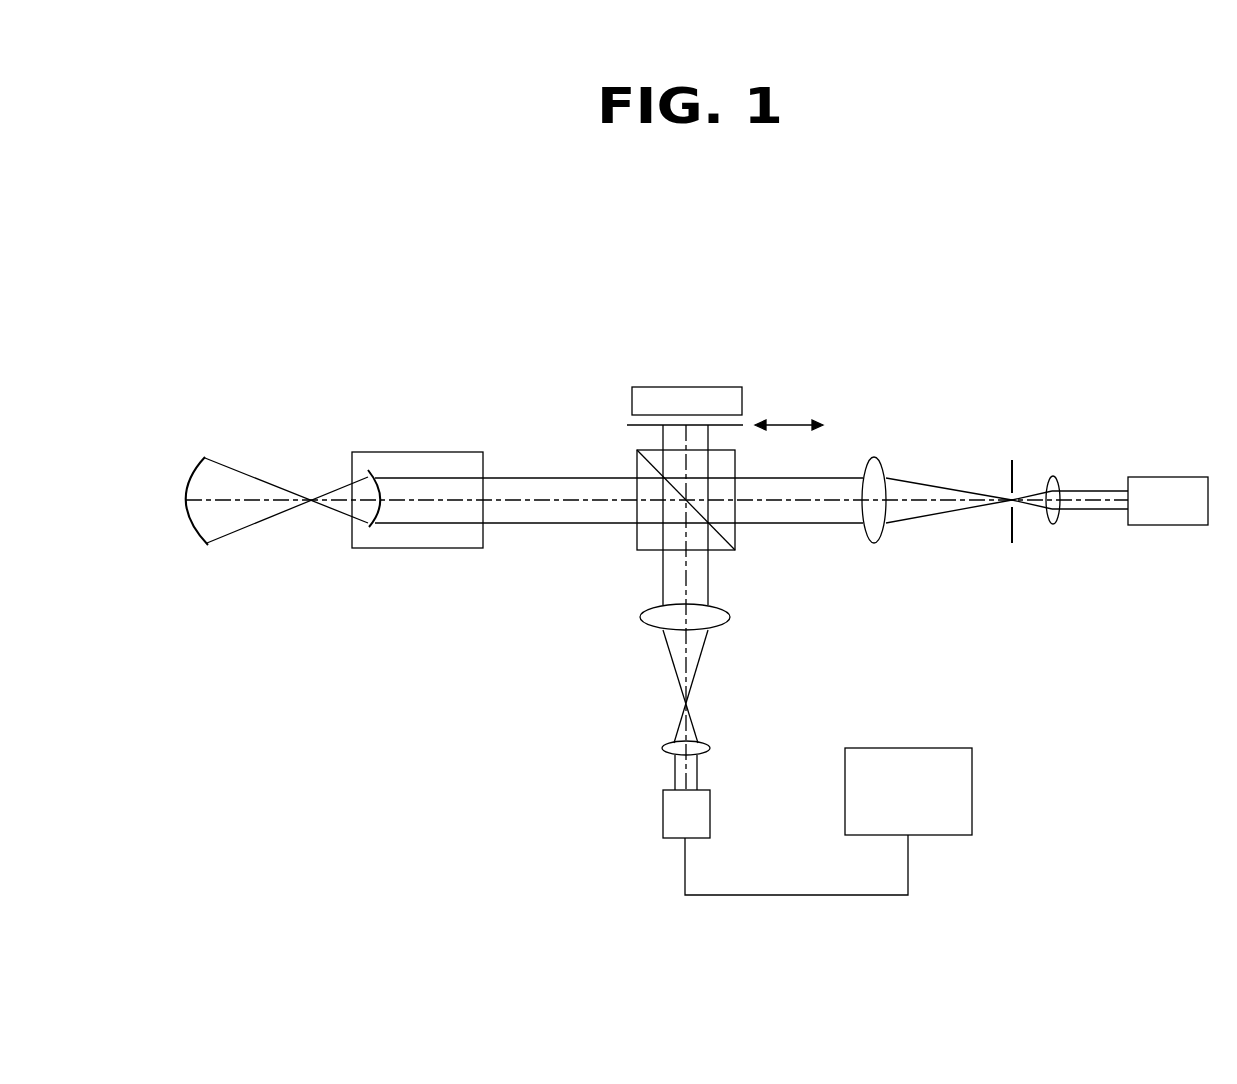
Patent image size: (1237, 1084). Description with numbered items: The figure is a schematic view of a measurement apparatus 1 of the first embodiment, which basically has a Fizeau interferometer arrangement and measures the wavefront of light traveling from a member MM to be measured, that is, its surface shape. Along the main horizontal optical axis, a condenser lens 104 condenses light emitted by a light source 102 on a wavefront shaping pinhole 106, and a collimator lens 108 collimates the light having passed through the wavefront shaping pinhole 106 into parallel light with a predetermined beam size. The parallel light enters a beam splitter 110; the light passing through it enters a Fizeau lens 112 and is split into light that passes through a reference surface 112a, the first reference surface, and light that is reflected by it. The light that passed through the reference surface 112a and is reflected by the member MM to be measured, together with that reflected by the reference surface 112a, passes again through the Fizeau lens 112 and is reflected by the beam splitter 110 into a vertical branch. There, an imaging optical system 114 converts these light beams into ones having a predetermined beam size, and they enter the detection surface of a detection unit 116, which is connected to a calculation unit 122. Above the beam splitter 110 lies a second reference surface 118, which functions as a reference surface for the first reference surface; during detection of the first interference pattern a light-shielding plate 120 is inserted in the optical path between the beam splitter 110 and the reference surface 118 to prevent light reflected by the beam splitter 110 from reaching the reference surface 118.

The measurement apparatus 1 is at (652, 317).
The light source 102 is at (1167, 476).
The condenser lens 104 is at (1053, 525).
The wavefront shaping pinhole 106 is at (1012, 460).
The collimator lens 108 is at (874, 457).
The beam splitter 110 is at (637, 540).
The Fizeau lens 112 is at (455, 452).
The reference surface 112a is at (370, 470).
The member to be measured MM is at (200, 455).
The imaging optical system 114 is at (743, 604).
The detection unit 116 is at (663, 817).
The reference surface 118 is at (632, 405).
The light-shielding plate 120 is at (743, 424).
The calculation unit 122 is at (940, 748).